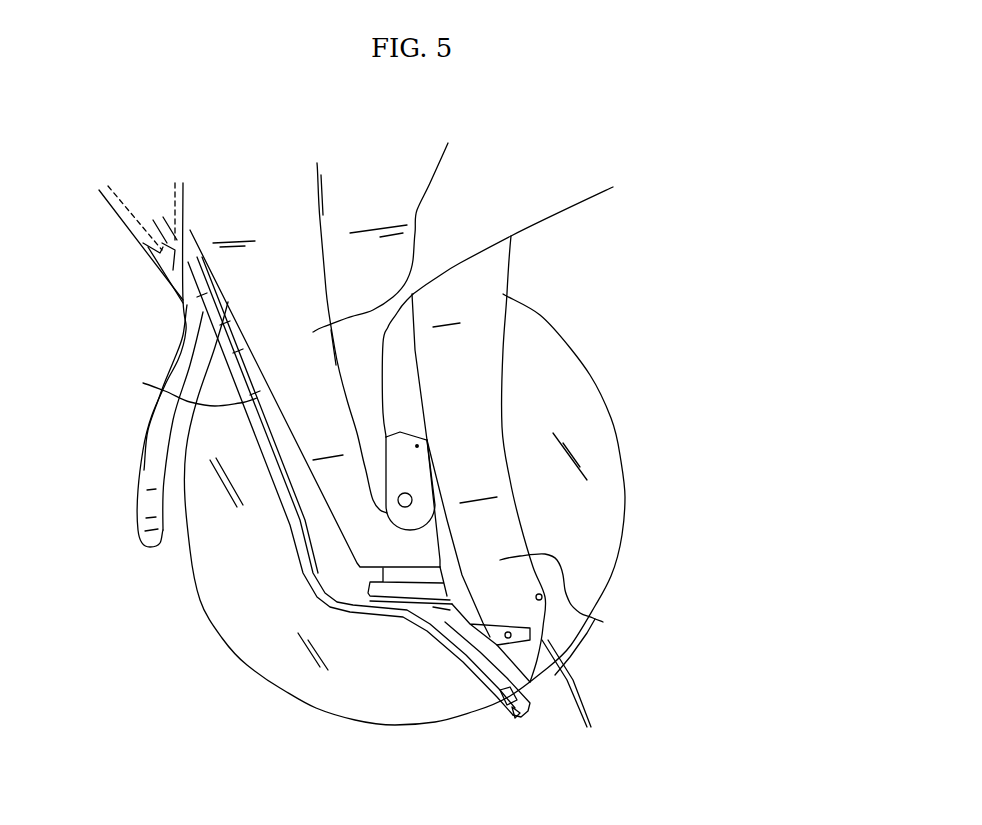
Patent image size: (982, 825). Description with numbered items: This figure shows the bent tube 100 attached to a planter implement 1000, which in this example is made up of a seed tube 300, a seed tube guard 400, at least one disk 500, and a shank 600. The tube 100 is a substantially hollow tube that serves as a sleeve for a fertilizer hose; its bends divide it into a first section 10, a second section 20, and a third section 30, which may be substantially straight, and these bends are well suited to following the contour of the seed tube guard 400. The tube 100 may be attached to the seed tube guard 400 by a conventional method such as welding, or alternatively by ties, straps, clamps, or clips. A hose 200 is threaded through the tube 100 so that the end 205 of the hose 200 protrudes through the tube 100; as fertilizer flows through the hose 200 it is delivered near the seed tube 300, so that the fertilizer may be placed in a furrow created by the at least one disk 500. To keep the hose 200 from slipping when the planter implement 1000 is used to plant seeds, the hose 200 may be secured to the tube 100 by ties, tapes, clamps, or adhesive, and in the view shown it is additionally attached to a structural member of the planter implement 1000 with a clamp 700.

The planter implement 1000 is at (732, 226).
The clamp 700 is at (160, 249).
The first section 10 is at (290, 534).
The hose 200 is at (188, 262).
The tube 100 is at (306, 591).
The seed tube guard 400 is at (445, 644).
The third section 30 is at (485, 665).
The end of the hose 205 is at (530, 723).
The second section 20 is at (358, 615).
The shank 600 is at (463, 340).
The disk 500 is at (540, 357).
The seed tube 300 is at (603, 622).